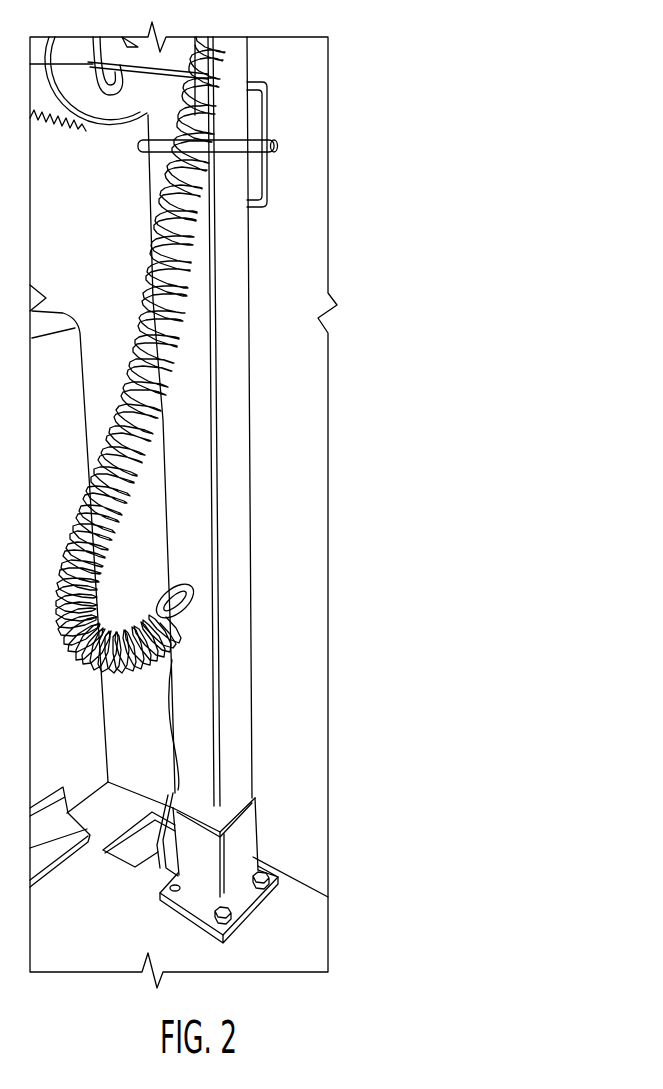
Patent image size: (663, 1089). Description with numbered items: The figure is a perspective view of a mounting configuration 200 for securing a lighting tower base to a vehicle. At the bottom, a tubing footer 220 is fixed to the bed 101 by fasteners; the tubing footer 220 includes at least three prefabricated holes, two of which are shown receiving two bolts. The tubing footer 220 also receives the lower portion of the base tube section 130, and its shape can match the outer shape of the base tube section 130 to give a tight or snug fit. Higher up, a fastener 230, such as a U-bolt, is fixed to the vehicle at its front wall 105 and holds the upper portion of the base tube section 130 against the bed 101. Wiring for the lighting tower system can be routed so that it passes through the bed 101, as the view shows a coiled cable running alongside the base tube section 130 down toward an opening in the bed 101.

The mounting configuration 200 is at (505, 102).
The bed 101 is at (100, 947).
The front wall 105 is at (303, 367).
The base tube section 130 is at (260, 700).
The tubing footer 220 is at (287, 867).
The fastener 230 is at (313, 142).